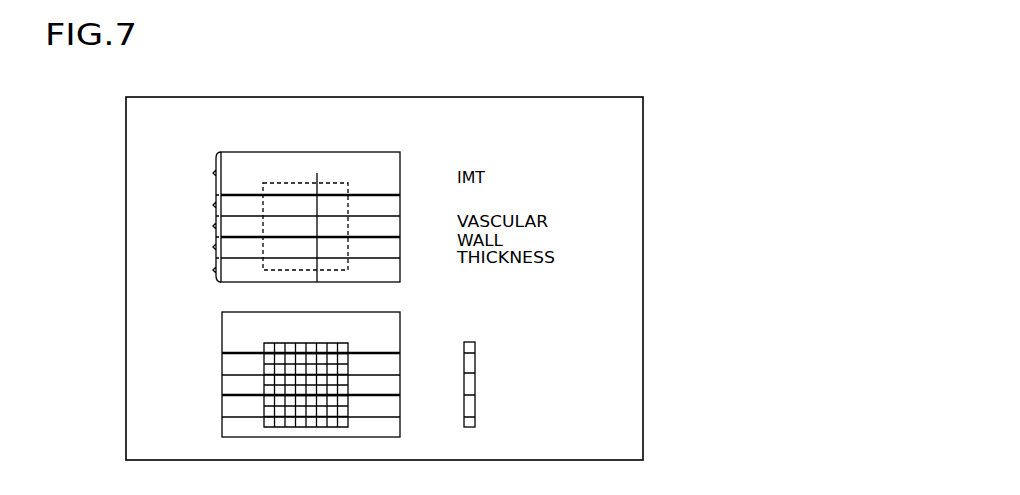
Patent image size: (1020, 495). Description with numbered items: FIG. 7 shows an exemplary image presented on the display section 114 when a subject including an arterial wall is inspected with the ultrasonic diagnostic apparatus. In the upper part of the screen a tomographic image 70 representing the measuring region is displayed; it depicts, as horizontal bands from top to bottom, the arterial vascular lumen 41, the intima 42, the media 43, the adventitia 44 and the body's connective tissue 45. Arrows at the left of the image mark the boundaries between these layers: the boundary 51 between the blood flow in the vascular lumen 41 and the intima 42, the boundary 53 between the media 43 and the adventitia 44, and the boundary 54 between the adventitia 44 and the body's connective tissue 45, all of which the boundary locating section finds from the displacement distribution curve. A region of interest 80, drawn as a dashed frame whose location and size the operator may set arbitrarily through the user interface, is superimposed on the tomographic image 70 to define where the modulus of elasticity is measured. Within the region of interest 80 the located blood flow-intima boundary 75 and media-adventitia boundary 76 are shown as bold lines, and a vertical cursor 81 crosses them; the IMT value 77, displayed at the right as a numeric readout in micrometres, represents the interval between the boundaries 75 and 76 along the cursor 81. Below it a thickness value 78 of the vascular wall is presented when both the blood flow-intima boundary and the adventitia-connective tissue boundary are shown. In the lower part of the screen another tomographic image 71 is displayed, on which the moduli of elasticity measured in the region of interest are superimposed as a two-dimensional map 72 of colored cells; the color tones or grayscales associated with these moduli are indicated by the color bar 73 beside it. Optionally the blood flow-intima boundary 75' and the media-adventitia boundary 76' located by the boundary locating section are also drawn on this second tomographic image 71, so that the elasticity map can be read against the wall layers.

The display section 114 is at (603, 97).
The tomographic image 70 is at (389, 152).
The another tomographic image 71 is at (389, 312).
The two-dimensional map 72 is at (268, 349).
The color bar 73 is at (473, 342).
The blood flow-intima boundary 75 is at (327, 176).
The media-adventitia boundary 76 is at (327, 218).
The blood flow-intima boundary 75' is at (330, 336).
The media-adventitia boundary 76' is at (330, 379).
The IMT value 77 is at (633, 171).
The thickness value 78 is at (633, 215).
The region of interest 80 is at (286, 183).
The cursor 81 is at (317, 173).
The vascular lumen 41 is at (209, 173).
The intima 42 is at (208, 205).
The media 43 is at (208, 226).
The adventitia 44 is at (208, 247).
The body's connective tissue 45 is at (209, 270).
The boundary between blood flow and intima 51 is at (220, 195).
The boundary between media and adventitia 53 is at (220, 237).
The boundary between adventitia and connective tissue 54 is at (220, 258).